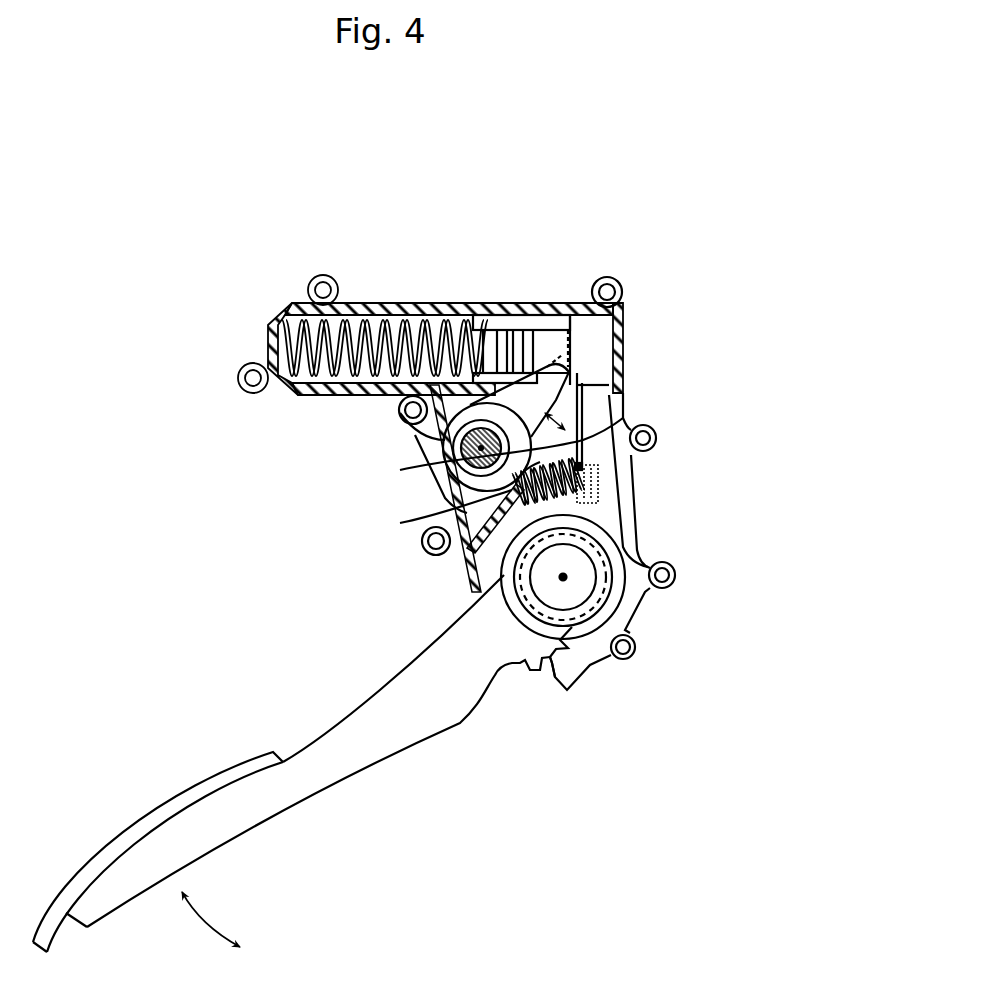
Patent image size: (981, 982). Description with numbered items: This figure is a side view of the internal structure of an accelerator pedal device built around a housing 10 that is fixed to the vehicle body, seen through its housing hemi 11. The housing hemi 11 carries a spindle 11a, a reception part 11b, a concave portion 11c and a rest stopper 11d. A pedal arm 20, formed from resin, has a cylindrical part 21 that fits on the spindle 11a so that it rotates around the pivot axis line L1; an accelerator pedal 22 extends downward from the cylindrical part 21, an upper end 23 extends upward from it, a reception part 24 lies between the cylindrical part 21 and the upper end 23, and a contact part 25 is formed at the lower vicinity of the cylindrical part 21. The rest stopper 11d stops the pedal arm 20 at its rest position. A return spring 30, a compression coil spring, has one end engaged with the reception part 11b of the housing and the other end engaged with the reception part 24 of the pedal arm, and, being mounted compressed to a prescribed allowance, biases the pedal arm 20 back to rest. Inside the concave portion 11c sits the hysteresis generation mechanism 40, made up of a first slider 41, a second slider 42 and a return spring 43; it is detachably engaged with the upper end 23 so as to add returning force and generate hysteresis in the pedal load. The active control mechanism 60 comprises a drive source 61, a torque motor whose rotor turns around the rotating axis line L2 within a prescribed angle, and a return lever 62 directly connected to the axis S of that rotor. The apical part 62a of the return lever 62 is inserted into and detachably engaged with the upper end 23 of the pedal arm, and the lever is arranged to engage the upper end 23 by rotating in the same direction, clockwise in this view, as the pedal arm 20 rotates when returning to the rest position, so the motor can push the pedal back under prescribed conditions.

The housing 10 is at (608, 537).
The housing hemi 11 is at (634, 467).
The spindle 11a is at (600, 533).
The reception part 11b is at (448, 512).
The concave portion 11c is at (402, 316).
The rest stopper 11d is at (614, 340).
The pedal arm 20 is at (418, 752).
The cylindrical part 21 is at (631, 575).
The accelerator pedal 22 is at (183, 795).
The upper end 23 is at (618, 315).
The reception part 24 is at (580, 506).
The contact part 25 is at (553, 678).
The return spring 30 is at (560, 457).
The hysteresis generation mechanism 40 is at (442, 278).
The first slider 41 is at (567, 300).
The second slider 42 is at (500, 305).
The return spring 43 is at (448, 305).
The active control mechanism 60 is at (412, 432).
The drive source 61 is at (389, 473).
The return lever 62 is at (412, 432).
The apical part 62a is at (616, 380).
The pivot axis line L1 is at (568, 576).
The rotating axis line L2 is at (460, 450).
The axis S is at (478, 448).